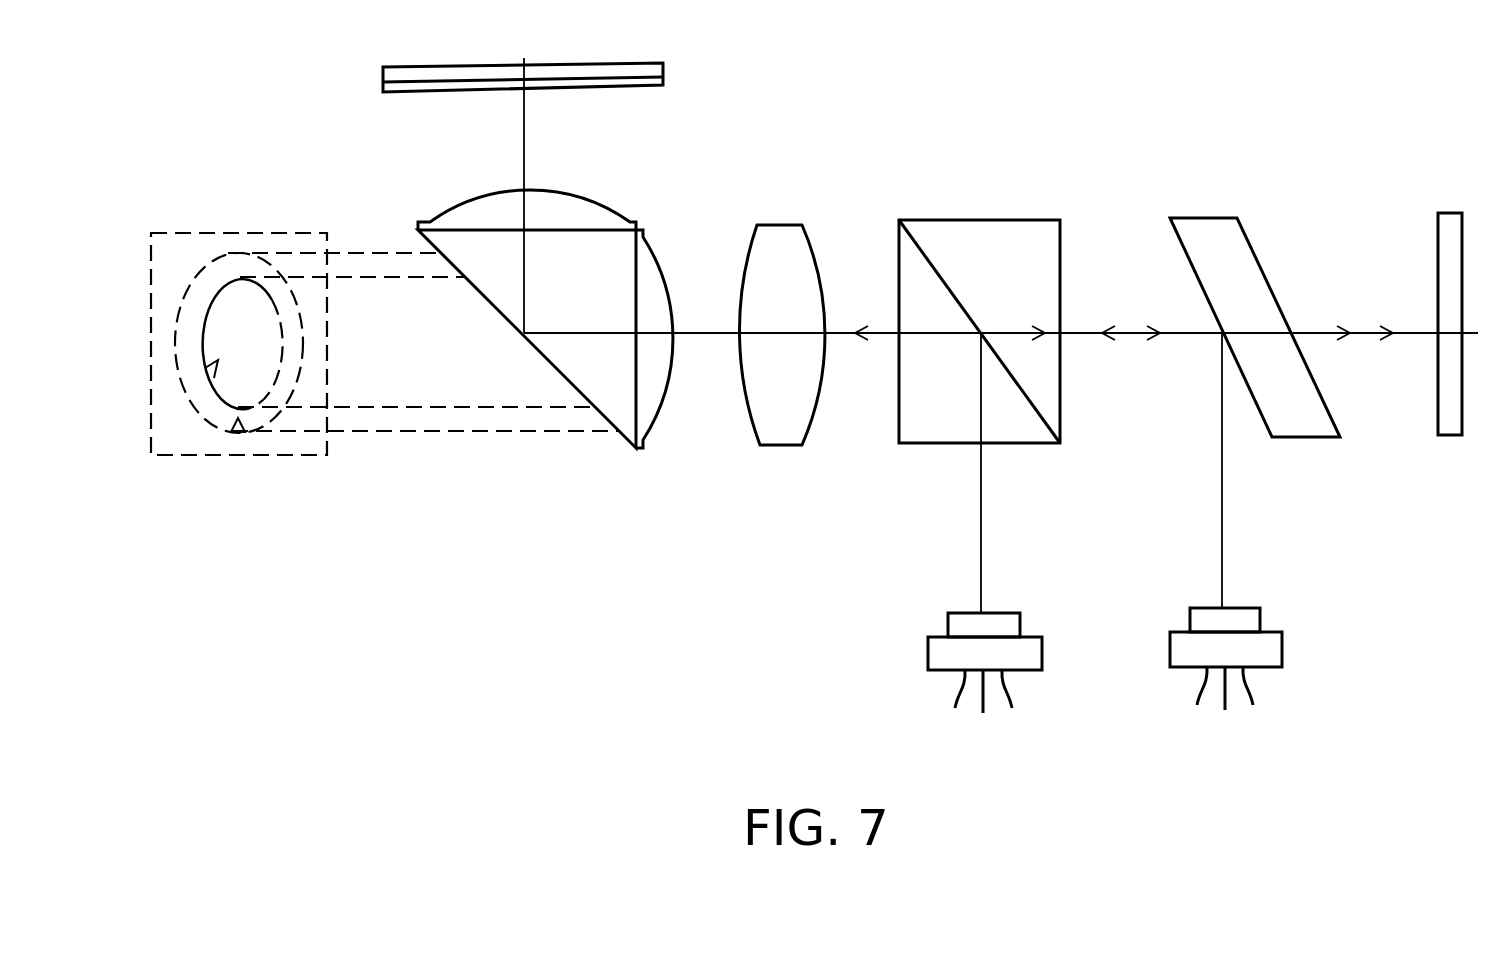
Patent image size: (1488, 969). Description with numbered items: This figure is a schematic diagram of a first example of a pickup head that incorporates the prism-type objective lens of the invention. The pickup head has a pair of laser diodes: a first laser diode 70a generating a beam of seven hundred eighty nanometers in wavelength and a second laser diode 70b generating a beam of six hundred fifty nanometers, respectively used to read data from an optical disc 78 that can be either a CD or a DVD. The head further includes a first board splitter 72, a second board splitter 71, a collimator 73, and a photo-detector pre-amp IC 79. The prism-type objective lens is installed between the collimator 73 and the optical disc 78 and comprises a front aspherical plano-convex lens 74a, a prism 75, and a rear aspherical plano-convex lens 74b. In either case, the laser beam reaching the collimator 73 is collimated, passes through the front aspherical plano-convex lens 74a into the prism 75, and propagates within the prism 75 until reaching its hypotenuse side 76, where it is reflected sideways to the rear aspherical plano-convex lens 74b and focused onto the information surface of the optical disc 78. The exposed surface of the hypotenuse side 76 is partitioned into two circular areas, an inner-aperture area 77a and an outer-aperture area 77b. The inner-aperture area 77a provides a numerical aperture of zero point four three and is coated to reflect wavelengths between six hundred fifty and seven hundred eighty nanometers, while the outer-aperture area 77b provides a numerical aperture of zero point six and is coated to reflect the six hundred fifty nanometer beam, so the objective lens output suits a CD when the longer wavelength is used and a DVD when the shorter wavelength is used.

The first laser diode 70a is at (1013, 612).
The second laser diode 70b is at (1250, 606).
The second board splitter 71 is at (1200, 216).
The first board splitter 72 is at (978, 218).
The collimator 73 is at (785, 222).
The front aspherical plano-convex lens 74a is at (669, 385).
The rear aspherical plano-convex lens 74b is at (578, 196).
The prism 75 is at (623, 408).
The hypotenuse side 76 is at (208, 232).
The inner-aperture area 77a is at (204, 392).
The outer-aperture area 77b is at (240, 438).
The optical disc 78 is at (664, 72).
The photo-detector pre-amp IC 79 is at (1450, 211).